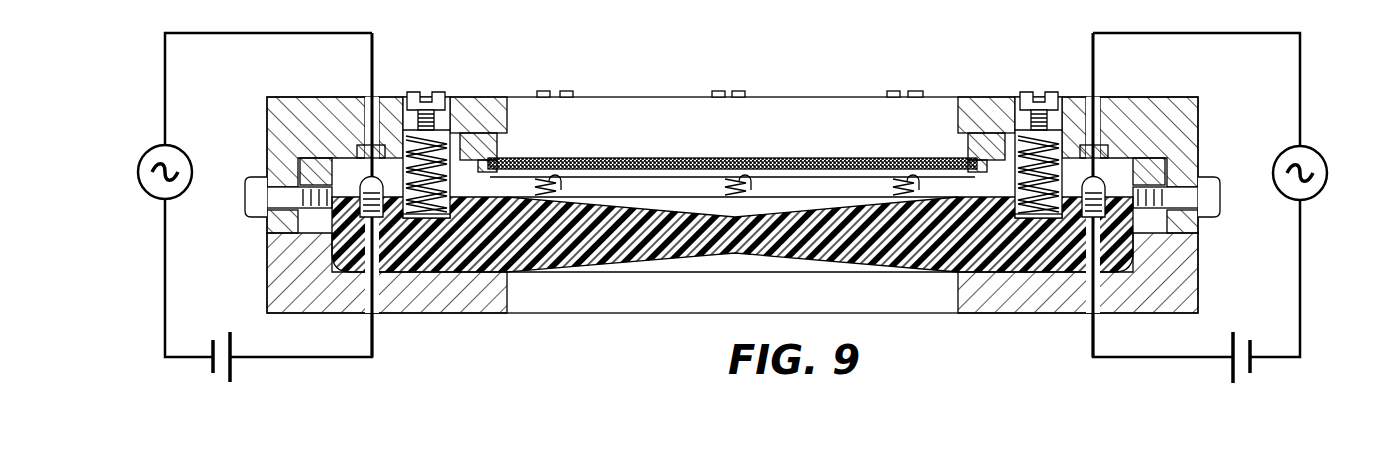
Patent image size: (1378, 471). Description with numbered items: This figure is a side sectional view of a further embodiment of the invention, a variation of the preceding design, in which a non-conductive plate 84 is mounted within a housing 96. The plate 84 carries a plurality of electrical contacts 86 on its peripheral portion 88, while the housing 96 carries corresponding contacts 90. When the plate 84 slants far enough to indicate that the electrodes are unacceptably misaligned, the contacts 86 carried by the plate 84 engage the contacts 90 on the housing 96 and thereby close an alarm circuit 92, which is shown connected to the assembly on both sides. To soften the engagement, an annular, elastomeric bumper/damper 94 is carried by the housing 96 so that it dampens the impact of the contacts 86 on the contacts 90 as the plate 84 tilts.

The non-conductive plate 84 is at (672, 235).
The electrical contacts 86 is at (737, 168).
The peripheral portion 88 is at (388, 185).
The contacts 90 is at (350, 137).
The alarm circuit 92 is at (165, 84).
The annular elastomeric bumper/damper 94 is at (985, 132).
The housing 96 is at (1183, 125).